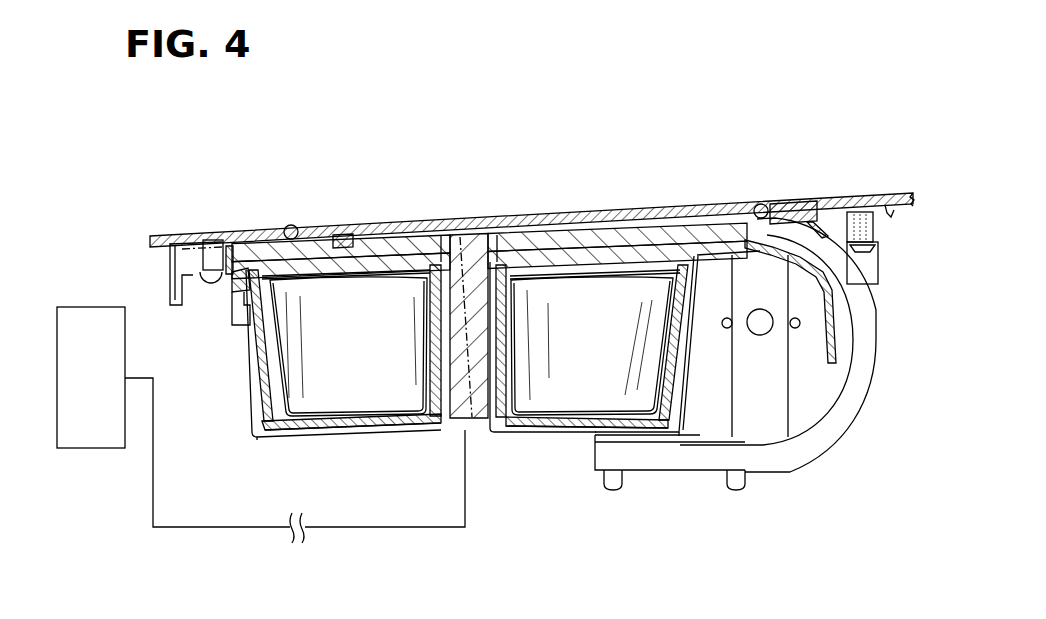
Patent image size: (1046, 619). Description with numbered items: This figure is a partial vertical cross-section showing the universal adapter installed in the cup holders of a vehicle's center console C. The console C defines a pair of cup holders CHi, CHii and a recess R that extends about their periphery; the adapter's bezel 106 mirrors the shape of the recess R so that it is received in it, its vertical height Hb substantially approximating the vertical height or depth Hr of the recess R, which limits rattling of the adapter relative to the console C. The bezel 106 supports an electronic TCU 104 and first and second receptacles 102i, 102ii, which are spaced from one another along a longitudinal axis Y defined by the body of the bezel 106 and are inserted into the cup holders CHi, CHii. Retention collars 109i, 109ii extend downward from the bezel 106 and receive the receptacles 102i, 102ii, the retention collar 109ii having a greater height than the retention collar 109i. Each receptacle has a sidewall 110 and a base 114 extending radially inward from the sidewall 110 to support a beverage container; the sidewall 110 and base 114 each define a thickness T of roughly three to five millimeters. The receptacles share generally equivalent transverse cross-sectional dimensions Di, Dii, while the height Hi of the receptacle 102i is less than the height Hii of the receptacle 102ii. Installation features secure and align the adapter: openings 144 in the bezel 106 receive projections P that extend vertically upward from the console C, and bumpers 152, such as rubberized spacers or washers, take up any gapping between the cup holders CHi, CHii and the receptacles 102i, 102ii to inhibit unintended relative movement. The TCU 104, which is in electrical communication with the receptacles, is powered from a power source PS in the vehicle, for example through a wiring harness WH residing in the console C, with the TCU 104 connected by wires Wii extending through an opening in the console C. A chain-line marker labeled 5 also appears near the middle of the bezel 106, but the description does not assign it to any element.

The partition wall 5 is at (492, 220).
The first receptacle 102i is at (270, 410).
The second receptacle 102ii is at (687, 413).
The electronic TCU 104 is at (542, 252).
The bezel 106 is at (607, 210).
The retention collar 109i is at (383, 284).
The retention collar 109ii is at (627, 284).
The sidewall 110 is at (258, 347).
The base 114 is at (352, 423).
The opening 144 is at (340, 234).
The bumper 152 is at (256, 369).
The longitudinal axis Y is at (140, 157).
The power source PS is at (71, 279).
The vertical height of recess Hr is at (115, 213).
The thickness T is at (264, 330).
The projection P is at (292, 230).
The vertical height of bezel Hb is at (722, 232).
The recess R is at (797, 192).
The center console C is at (918, 229).
The height of first receptacle Hi is at (338, 272).
The height of second receptacle Hii is at (587, 268).
The transverse cross-sectional dimension of first receptacle Di is at (437, 478).
The transverse cross-sectional dimension of second receptacle Dii is at (503, 425).
The first cup holder CHi is at (247, 387).
The second cup holder CHii is at (692, 395).
The wiring harness WH is at (90, 452).
The wires Wii is at (374, 528).